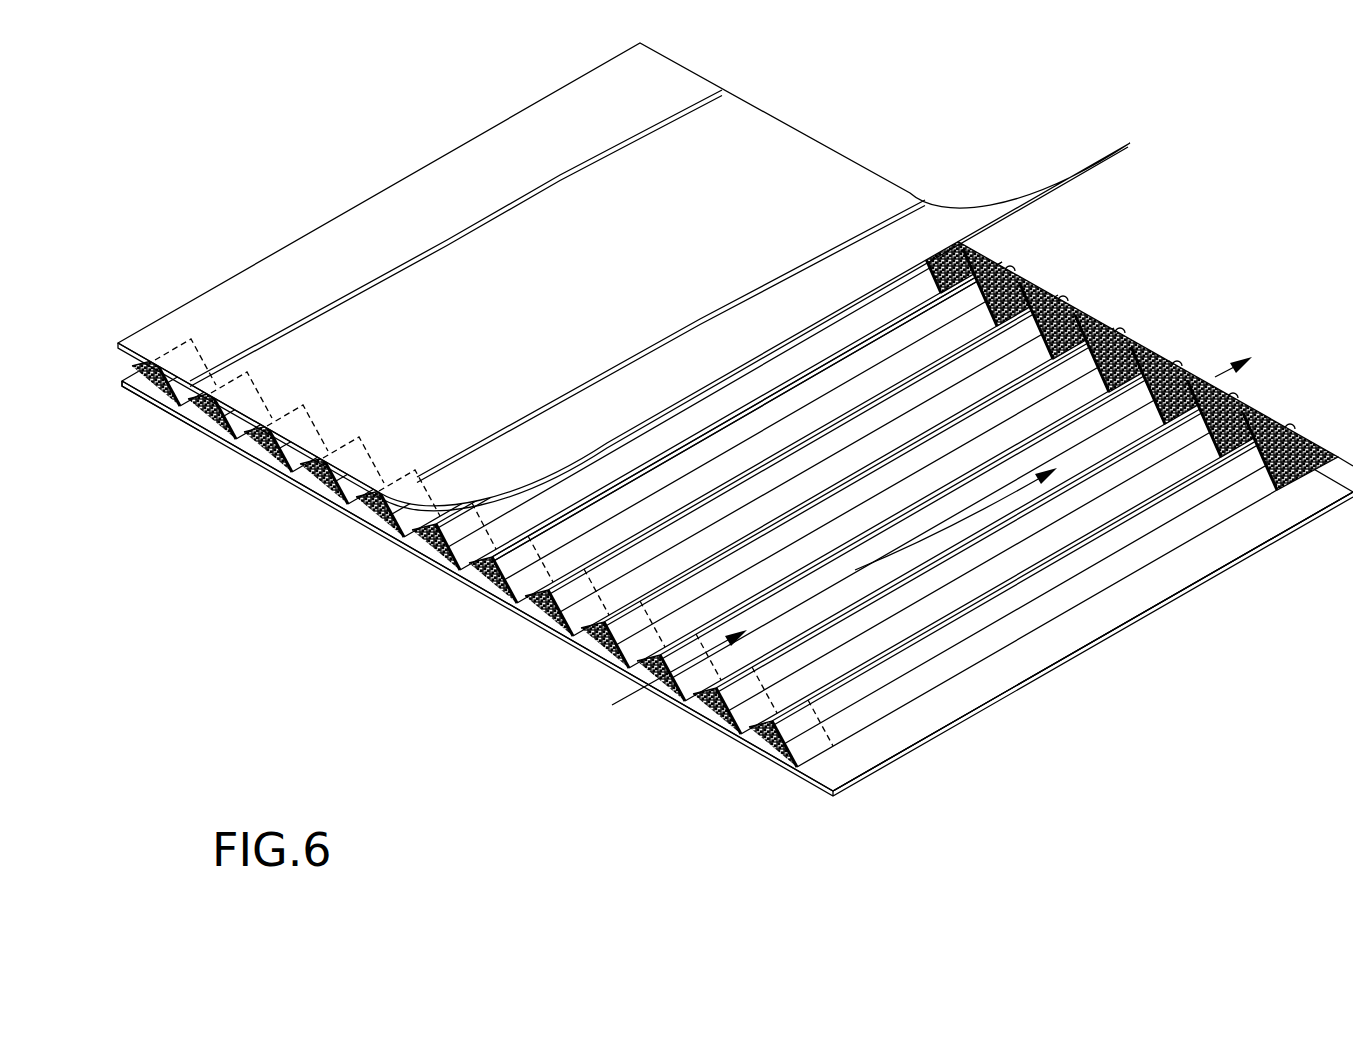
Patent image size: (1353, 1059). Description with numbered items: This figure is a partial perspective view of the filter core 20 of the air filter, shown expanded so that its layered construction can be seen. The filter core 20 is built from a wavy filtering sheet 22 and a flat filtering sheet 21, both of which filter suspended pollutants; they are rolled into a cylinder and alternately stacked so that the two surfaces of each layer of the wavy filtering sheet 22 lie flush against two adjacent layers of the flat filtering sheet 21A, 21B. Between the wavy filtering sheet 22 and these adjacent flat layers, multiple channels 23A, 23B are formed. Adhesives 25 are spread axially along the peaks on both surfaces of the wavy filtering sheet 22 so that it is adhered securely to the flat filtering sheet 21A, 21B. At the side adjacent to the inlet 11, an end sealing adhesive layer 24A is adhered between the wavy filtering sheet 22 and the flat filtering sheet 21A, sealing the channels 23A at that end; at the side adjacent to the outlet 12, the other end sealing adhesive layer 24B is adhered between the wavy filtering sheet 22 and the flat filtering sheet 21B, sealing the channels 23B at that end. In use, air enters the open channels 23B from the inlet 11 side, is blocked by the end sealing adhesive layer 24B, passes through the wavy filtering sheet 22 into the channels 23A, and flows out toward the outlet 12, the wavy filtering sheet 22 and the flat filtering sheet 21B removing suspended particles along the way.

The filter core 20 is at (306, 184).
The flat filtering sheet 21 is at (957, 705).
The layer of the flat filtering sheet 21A is at (137, 392).
The layer of the flat filtering sheet 21B is at (250, 285).
The wavy filtering sheet 22 is at (1032, 615).
The channels 23A is at (332, 499).
The channels 23B is at (263, 468).
The end sealing adhesive layer 24A is at (478, 582).
The end sealing adhesive layer 24B is at (1170, 362).
The adhesives 25 is at (1013, 387).
The inlet 11 is at (487, 749).
The outlet 12 is at (1290, 189).